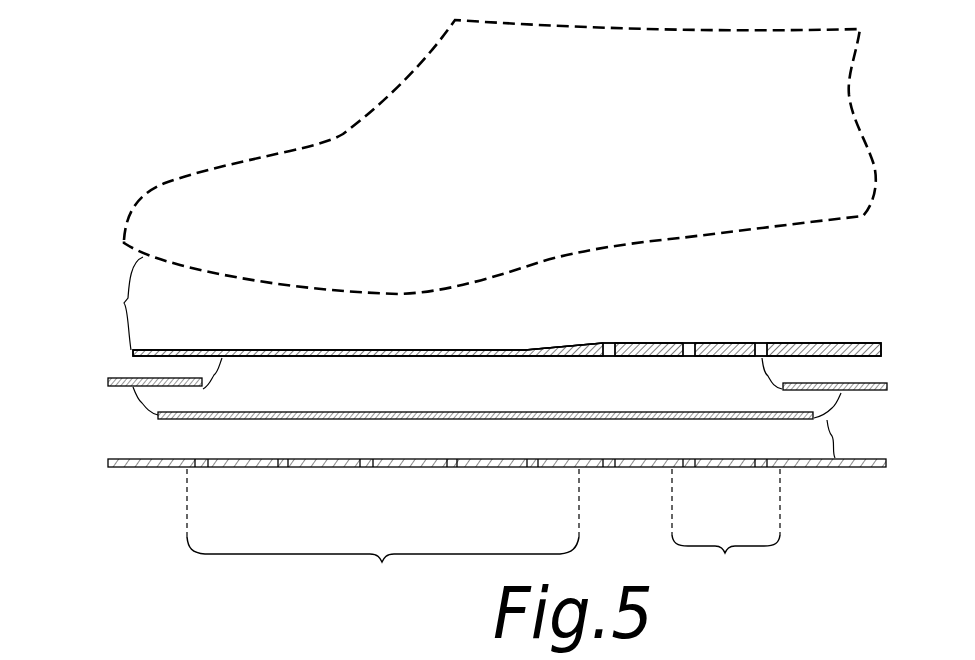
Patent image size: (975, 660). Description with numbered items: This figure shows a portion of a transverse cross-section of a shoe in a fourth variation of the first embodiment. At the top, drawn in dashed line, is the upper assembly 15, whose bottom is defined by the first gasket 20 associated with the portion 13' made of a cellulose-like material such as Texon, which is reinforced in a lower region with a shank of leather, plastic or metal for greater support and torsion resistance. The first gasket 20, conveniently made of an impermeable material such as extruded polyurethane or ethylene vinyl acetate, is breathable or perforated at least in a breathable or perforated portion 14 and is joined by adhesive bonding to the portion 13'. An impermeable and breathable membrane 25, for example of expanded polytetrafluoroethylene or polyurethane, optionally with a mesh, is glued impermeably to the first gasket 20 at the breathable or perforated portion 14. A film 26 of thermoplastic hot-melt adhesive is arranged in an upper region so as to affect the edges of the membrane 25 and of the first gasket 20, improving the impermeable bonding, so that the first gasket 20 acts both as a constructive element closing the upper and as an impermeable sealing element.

The upper assembly 15 is at (343, 135).
The portion made of cellulose-like material 13' is at (533, 306).
The impermeable and breathable membrane 25 is at (643, 416).
The first gasket 20 is at (108, 463).
The film of thermoplastic hot-melt adhesive 26 is at (122, 378).
The breathable or perforated portion 14 is at (483, 535).